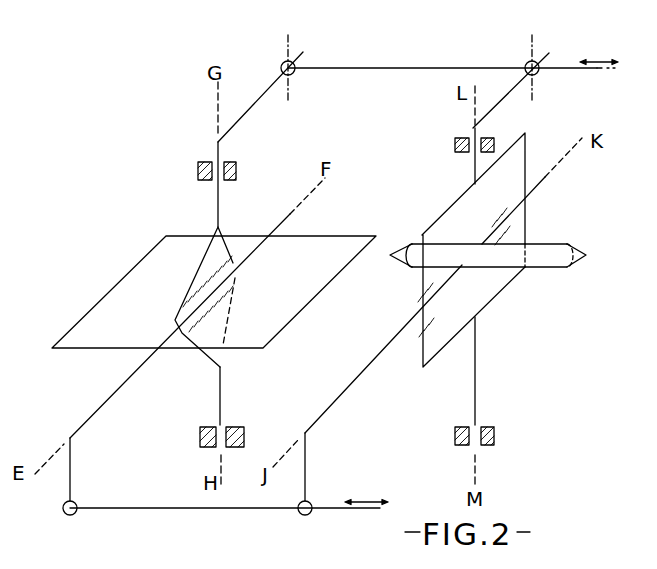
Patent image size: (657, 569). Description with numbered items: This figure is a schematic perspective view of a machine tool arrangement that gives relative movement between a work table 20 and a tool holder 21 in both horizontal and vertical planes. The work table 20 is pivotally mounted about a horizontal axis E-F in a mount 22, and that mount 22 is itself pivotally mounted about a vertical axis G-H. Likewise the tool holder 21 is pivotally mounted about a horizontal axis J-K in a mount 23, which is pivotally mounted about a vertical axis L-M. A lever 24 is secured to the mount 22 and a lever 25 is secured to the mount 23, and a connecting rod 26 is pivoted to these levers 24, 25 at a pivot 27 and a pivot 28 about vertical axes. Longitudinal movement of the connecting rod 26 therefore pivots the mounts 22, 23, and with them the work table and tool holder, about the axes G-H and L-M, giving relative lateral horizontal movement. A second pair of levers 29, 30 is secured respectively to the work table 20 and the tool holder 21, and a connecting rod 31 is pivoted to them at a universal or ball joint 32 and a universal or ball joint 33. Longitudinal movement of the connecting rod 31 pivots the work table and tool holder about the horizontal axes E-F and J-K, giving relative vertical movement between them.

The work table 20 is at (98, 302).
The tool holder 21 is at (530, 268).
The mount 22 is at (202, 258).
The mount 23 is at (459, 201).
The lever 24 is at (260, 98).
The lever 25 is at (513, 98).
The connecting rod 26 is at (376, 68).
The pivot 27 is at (293, 62).
The pivot 28 is at (527, 62).
The lever 29 is at (136, 366).
The lever 30 is at (350, 392).
The connecting rod 31 is at (200, 510).
The universal or ball joint 32 is at (66, 505).
The universal or ball joint 33 is at (309, 512).